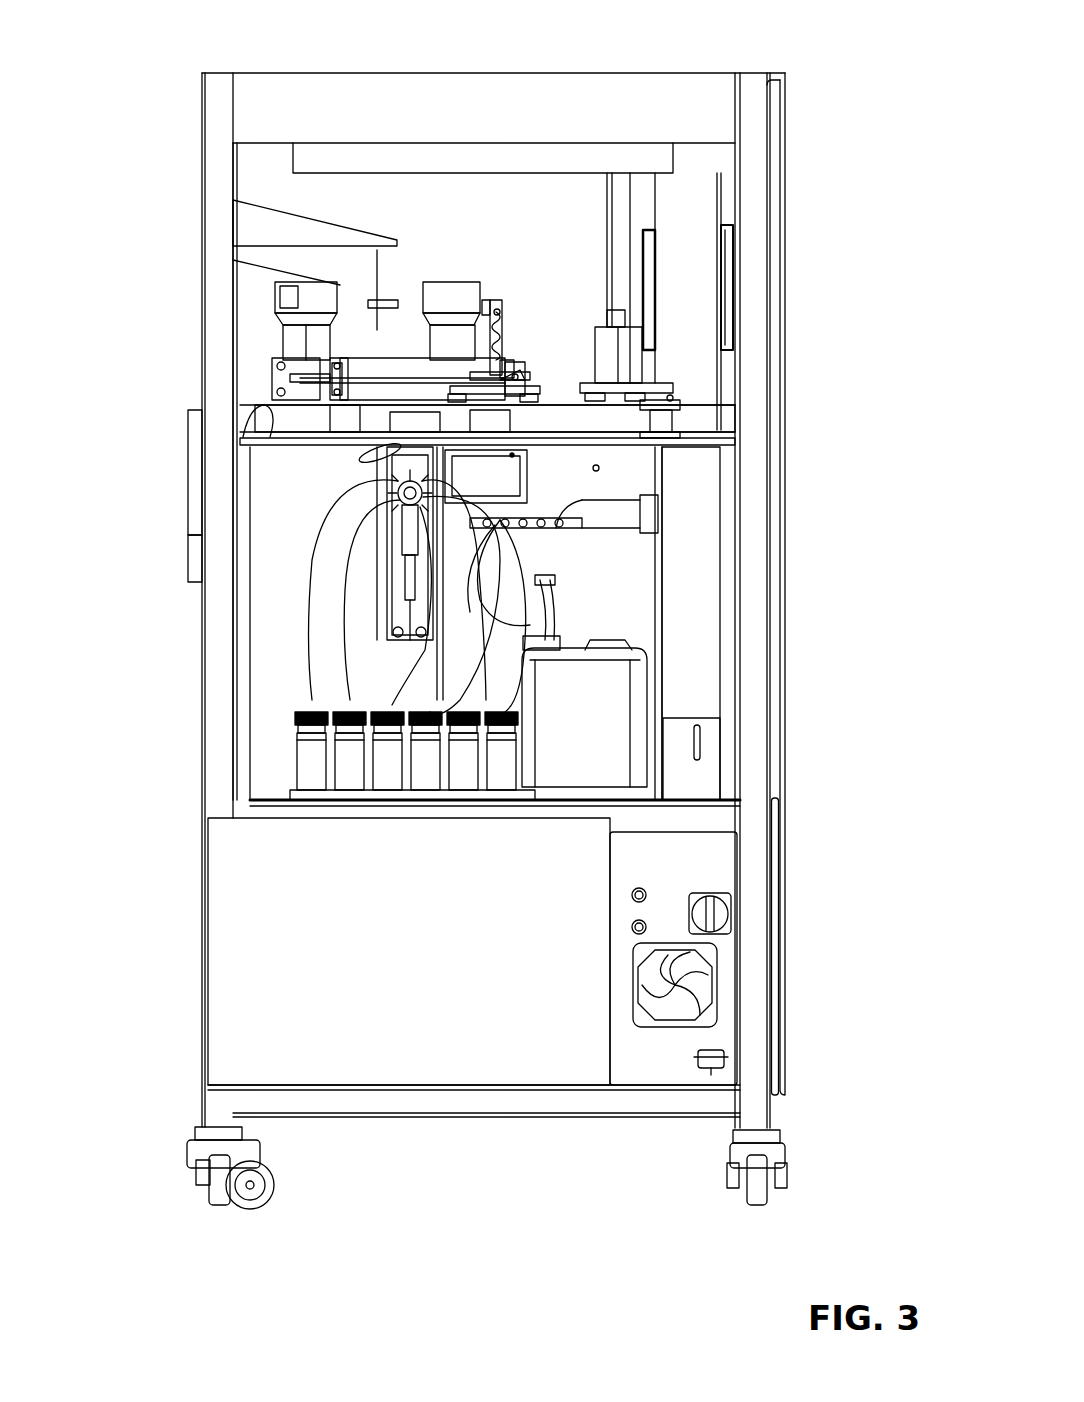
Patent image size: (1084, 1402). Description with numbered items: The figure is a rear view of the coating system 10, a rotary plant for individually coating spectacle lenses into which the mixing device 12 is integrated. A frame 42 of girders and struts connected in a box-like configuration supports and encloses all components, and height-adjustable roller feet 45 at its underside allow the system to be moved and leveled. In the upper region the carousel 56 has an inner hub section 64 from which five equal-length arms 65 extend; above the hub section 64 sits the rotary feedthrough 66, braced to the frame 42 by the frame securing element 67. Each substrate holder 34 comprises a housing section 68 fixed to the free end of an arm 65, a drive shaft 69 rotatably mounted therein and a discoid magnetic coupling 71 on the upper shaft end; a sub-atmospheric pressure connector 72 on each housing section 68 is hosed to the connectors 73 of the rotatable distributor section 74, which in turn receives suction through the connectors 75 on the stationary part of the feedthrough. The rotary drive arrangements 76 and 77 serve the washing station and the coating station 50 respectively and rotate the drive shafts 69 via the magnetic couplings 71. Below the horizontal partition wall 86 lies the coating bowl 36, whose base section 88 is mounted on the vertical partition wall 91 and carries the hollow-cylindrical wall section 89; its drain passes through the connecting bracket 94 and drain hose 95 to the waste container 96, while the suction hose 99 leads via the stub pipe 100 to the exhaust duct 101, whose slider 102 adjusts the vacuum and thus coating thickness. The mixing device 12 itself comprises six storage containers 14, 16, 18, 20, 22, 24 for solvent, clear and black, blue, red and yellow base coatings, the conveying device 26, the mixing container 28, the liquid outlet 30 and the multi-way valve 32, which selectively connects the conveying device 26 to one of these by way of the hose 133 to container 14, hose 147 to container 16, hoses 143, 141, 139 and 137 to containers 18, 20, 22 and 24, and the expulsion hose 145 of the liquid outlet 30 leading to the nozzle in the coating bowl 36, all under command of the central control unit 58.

The coating system 10 is at (758, 38).
The mixing device 12 is at (262, 630).
The storage container 14 is at (316, 774).
The storage container 16 is at (350, 774).
The storage container 18 is at (383, 774).
The storage container 20 is at (425, 774).
The storage container 22 is at (460, 774).
The storage container 24 is at (497, 774).
The conveying device 26 is at (383, 597).
The mixing container 28 is at (385, 457).
The liquid outlet 30 is at (402, 532).
The multi-way valve 32 is at (405, 490).
The substrate holder 34 is at (500, 405).
The coating bowl 36 is at (486, 476).
The frame 42 is at (218, 98).
The roller feet 45 is at (258, 1158).
The coating station 50 is at (504, 420).
The carousel 56 is at (512, 385).
The central control unit 58 is at (738, 245).
The hub section 64 is at (420, 378).
The arms 65 is at (337, 360).
The rotary feedthrough 66 is at (496, 312).
The frame securing element 67 is at (388, 302).
The housing section 68 is at (660, 418).
The drive shaft 69 is at (660, 437).
The magnetic coupling 71 is at (660, 376).
The sub-atmospheric pressure connector 72 is at (668, 406).
The sub-atmospheric pressure connectors 73 is at (505, 392).
The distributor section 74 is at (486, 315).
The sub-atmospheric pressure connectors 75 is at (506, 360).
The rotary drive arrangement 76 is at (306, 321).
The rotary drive arrangement 77 is at (451, 321).
The horizontal partition wall 86 is at (262, 430).
The base section 88 is at (532, 520).
The wall section 89 is at (514, 456).
The vertical partition wall 91 is at (639, 623).
The connecting bracket 94 is at (525, 555).
The drain hose 95 is at (550, 600).
The waste container 96 is at (584, 711).
The suction hose 99 is at (592, 516).
The stub pipe 100 is at (648, 515).
The exhaust duct 101 is at (691, 623).
The slider 102 is at (691, 759).
The hose 133 is at (330, 715).
The hose 137 is at (512, 700).
The hose 139 is at (505, 708).
The hose 141 is at (500, 688).
The hose 143 is at (500, 668).
The expulsion hose 145 is at (403, 545).
The hose 147 is at (330, 690).